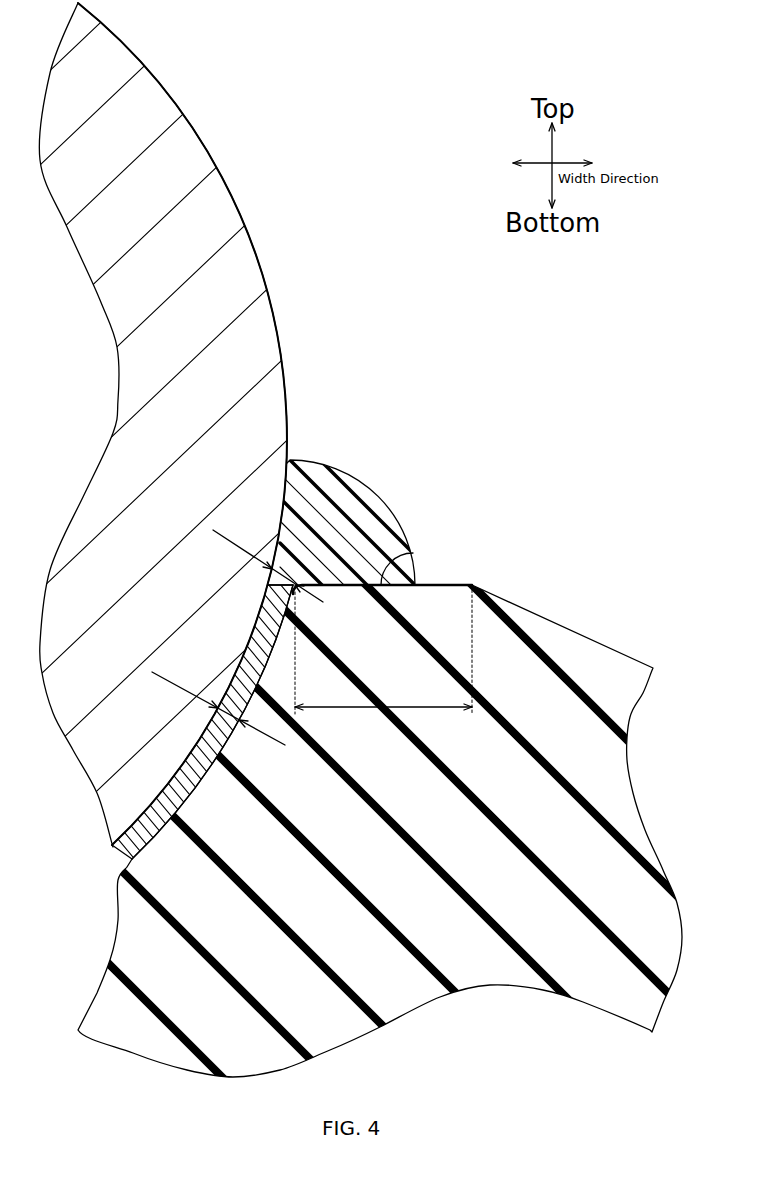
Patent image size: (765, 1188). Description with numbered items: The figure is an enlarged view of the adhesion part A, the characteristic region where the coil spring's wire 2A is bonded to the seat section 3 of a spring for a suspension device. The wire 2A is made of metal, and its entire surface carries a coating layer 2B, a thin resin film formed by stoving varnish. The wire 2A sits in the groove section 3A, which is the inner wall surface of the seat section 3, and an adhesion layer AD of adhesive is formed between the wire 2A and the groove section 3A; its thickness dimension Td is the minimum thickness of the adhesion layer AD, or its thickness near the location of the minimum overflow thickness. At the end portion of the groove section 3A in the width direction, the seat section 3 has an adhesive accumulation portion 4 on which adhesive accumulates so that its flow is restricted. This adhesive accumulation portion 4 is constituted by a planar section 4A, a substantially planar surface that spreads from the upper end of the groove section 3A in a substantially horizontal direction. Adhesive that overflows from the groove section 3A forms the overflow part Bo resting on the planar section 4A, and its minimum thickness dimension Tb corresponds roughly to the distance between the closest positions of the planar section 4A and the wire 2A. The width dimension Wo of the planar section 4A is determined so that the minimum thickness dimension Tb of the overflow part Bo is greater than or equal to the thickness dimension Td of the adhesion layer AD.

The wire 2A is at (182, 147).
The coating layer 2B is at (233, 193).
The adhesion part A is at (350, 370).
The overflow part Bo is at (383, 490).
The planar section 4A is at (413, 562).
The adhesive accumulation portion 4 is at (428, 583).
The width dimension of the planar section Wo is at (383, 696).
The minimum thickness dimension of the overflow part Tb is at (268, 558).
The thickness dimension of the adhesion layer Td is at (218, 698).
The adhesion layer AD is at (172, 792).
The groove section 3A is at (120, 852).
The seat section 3 is at (402, 1000).